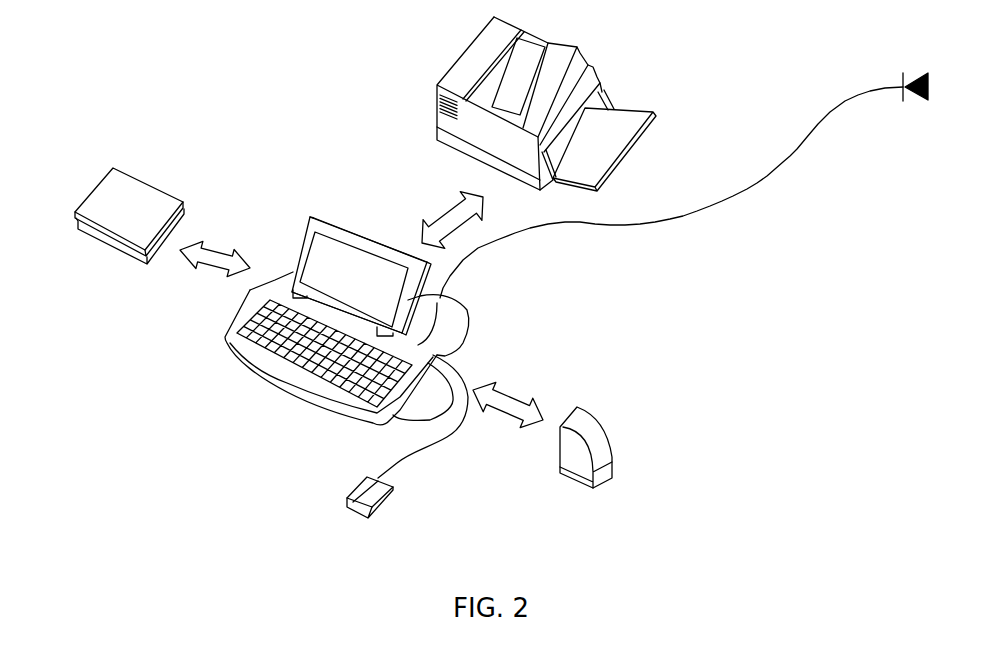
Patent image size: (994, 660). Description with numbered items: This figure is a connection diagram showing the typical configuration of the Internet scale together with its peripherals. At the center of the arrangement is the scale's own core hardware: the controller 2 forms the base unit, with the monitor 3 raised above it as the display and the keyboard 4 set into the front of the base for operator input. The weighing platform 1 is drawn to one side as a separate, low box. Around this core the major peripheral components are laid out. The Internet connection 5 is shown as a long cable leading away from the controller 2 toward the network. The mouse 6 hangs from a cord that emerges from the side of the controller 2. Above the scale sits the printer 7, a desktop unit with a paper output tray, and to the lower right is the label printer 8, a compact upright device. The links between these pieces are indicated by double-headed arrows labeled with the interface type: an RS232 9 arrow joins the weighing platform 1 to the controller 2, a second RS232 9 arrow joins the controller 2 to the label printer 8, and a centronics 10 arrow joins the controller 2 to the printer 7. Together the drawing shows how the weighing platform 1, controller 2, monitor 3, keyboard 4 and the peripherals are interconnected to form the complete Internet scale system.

The weighing platform 1 is at (115, 197).
The controller 2 is at (438, 322).
The monitor 3 is at (387, 283).
The keyboard 4 is at (262, 345).
The Internet connection 5 is at (747, 192).
The mouse 6 is at (365, 498).
The printer 7 is at (467, 70).
The label printer 8 is at (593, 437).
The RS232 connection 9 is at (215, 250).
The centronics connection 10 is at (450, 202).